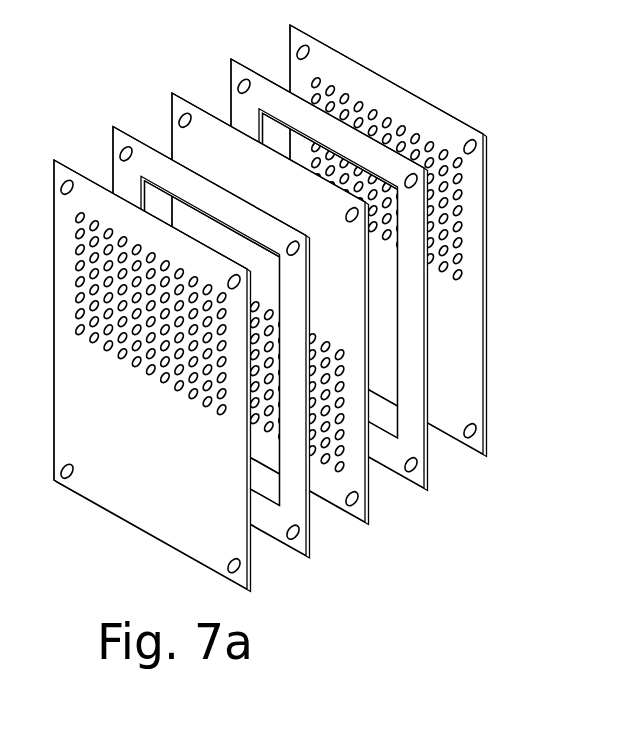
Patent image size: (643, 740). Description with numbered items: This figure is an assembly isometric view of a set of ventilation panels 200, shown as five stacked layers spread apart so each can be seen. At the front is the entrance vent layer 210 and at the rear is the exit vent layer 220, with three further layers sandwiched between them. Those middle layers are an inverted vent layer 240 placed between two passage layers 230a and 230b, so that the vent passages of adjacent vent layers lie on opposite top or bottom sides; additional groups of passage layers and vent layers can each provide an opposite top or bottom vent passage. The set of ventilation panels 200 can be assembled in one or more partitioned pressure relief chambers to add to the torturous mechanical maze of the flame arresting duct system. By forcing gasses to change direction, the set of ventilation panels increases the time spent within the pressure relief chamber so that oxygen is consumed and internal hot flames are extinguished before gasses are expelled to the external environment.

The set of ventilation panels 200 is at (318, 341).
The entrance vent layer 210 is at (240, 408).
The exit vent layer 220 is at (450, 244).
The passage layer 230a is at (351, 378).
The passage layer 230b is at (422, 291).
The inverted vent layer 240 is at (383, 336).